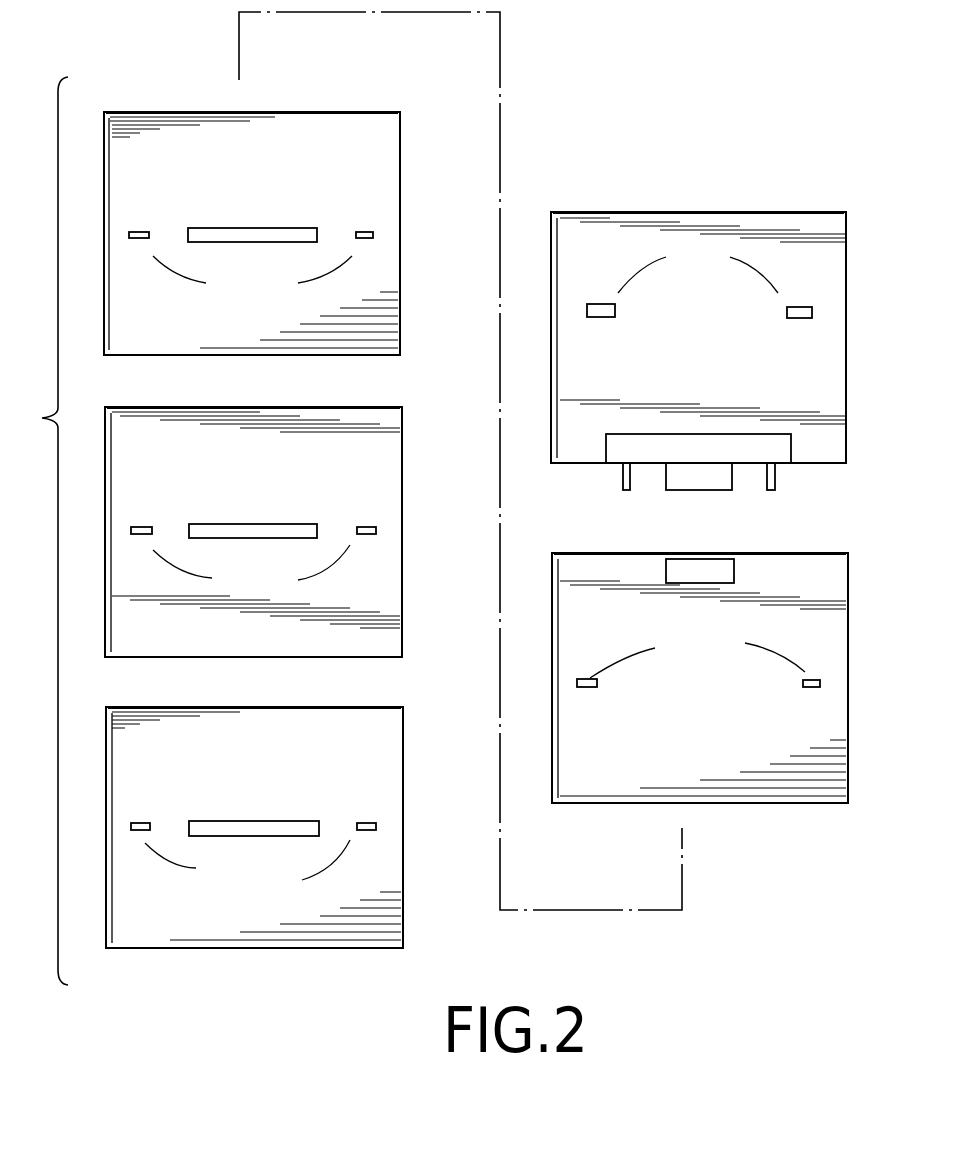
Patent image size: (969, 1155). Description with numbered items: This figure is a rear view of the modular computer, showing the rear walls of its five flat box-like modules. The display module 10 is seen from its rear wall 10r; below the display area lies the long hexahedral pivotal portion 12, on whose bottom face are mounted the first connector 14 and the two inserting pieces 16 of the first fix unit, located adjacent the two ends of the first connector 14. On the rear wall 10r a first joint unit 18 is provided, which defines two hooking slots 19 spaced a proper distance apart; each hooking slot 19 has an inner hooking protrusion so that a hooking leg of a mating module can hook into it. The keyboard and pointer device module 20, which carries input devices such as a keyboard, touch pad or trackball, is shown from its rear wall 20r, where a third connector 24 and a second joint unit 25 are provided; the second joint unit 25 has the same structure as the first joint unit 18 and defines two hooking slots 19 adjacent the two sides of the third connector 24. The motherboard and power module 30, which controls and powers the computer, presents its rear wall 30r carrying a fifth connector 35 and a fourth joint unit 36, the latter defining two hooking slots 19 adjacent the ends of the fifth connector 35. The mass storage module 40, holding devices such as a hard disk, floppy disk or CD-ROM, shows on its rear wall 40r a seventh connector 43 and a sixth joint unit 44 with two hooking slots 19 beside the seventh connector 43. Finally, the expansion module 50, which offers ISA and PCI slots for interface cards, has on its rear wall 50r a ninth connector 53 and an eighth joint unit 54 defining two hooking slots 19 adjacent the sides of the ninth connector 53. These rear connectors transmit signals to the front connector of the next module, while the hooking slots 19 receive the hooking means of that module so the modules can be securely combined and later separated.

The display module 10 is at (864, 334).
The rear wall of the display module 10r is at (830, 222).
The pivotal portion 12 is at (676, 450).
The first connector 14 is at (702, 493).
The inserting pieces 16 is at (627, 492).
The first joint unit 18 is at (698, 265).
The hooking slots 19 is at (143, 232).
The keyboard and pointer device module 20 is at (870, 654).
The rear wall of the keyboard and pointer device module 20r is at (834, 550).
The third connector 24 is at (728, 573).
The second joint unit 25 is at (697, 652).
The motherboard and power module 30 is at (415, 176).
The rear wall of the motherboard and power module 30r is at (356, 118).
The fifth connector 35 is at (263, 228).
The fourth joint unit 36 is at (252, 282).
The mass storage module 40 is at (421, 485).
The rear wall of the mass storage module 40r is at (383, 412).
The seventh connector 43 is at (251, 523).
The sixth joint unit 44 is at (251, 570).
The expansion module 50 is at (419, 766).
The rear wall of the expansion module 50r is at (383, 715).
The ninth connector 53 is at (260, 820).
The eighth joint unit 54 is at (247, 868).